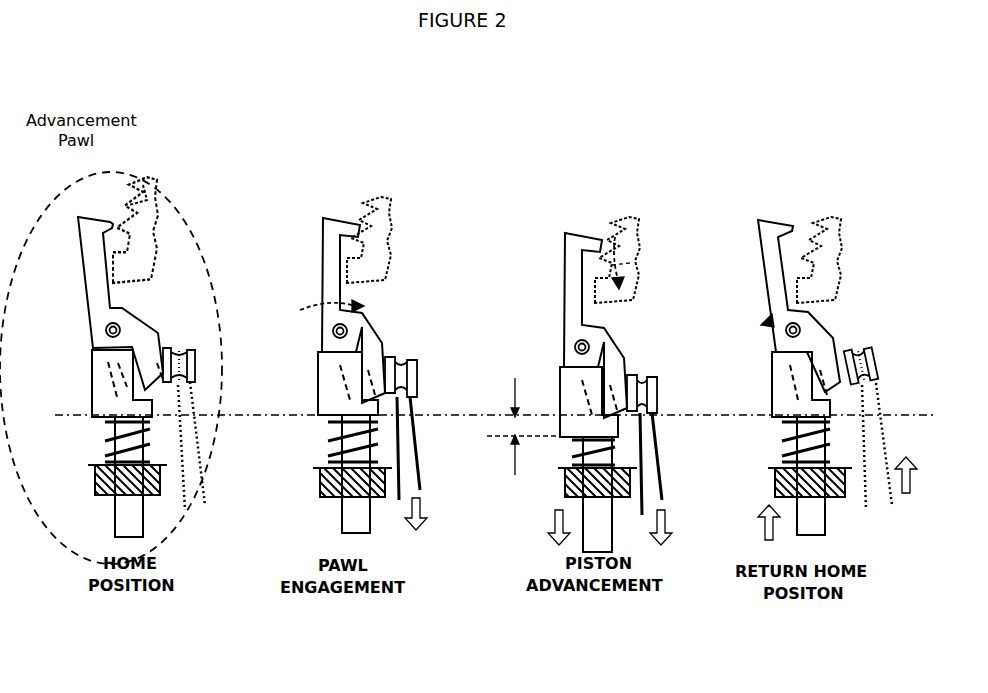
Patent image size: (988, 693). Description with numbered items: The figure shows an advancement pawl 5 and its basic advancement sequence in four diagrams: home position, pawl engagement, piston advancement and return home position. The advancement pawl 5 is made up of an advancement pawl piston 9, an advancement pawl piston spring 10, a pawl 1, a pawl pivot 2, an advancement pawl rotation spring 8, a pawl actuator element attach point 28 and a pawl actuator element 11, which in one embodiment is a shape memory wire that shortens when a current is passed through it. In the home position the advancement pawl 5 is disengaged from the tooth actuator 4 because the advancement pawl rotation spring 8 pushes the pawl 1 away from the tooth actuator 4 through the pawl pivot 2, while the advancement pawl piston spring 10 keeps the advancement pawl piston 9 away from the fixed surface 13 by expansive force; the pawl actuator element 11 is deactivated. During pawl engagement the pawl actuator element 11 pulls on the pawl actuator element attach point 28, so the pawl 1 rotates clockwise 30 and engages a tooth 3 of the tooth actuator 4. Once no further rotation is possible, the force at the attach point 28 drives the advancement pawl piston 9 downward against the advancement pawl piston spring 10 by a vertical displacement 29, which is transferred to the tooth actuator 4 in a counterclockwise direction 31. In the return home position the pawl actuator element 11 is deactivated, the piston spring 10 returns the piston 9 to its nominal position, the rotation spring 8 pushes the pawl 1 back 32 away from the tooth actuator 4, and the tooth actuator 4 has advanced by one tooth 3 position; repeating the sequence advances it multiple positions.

The pawl 1 is at (772, 252).
The pawl pivot 2 is at (106, 330).
The tooth 3 is at (160, 182).
The tooth actuator 4 is at (853, 278).
The advancement pawl 5 is at (103, 176).
The advancement pawl rotation spring 8 is at (122, 362).
The advancement pawl piston 9 is at (112, 537).
The advancement pawl piston spring 10 is at (322, 443).
The pawl actuator element 11 is at (203, 520).
The fixed surface 13 is at (103, 488).
The pawl actuator element attach point 28 is at (414, 340).
The vertical displacement 29 is at (488, 440).
The clockwise rotation 30 is at (308, 300).
The counterclockwise direction 31 is at (630, 263).
The pawl return direction 32 is at (782, 313).